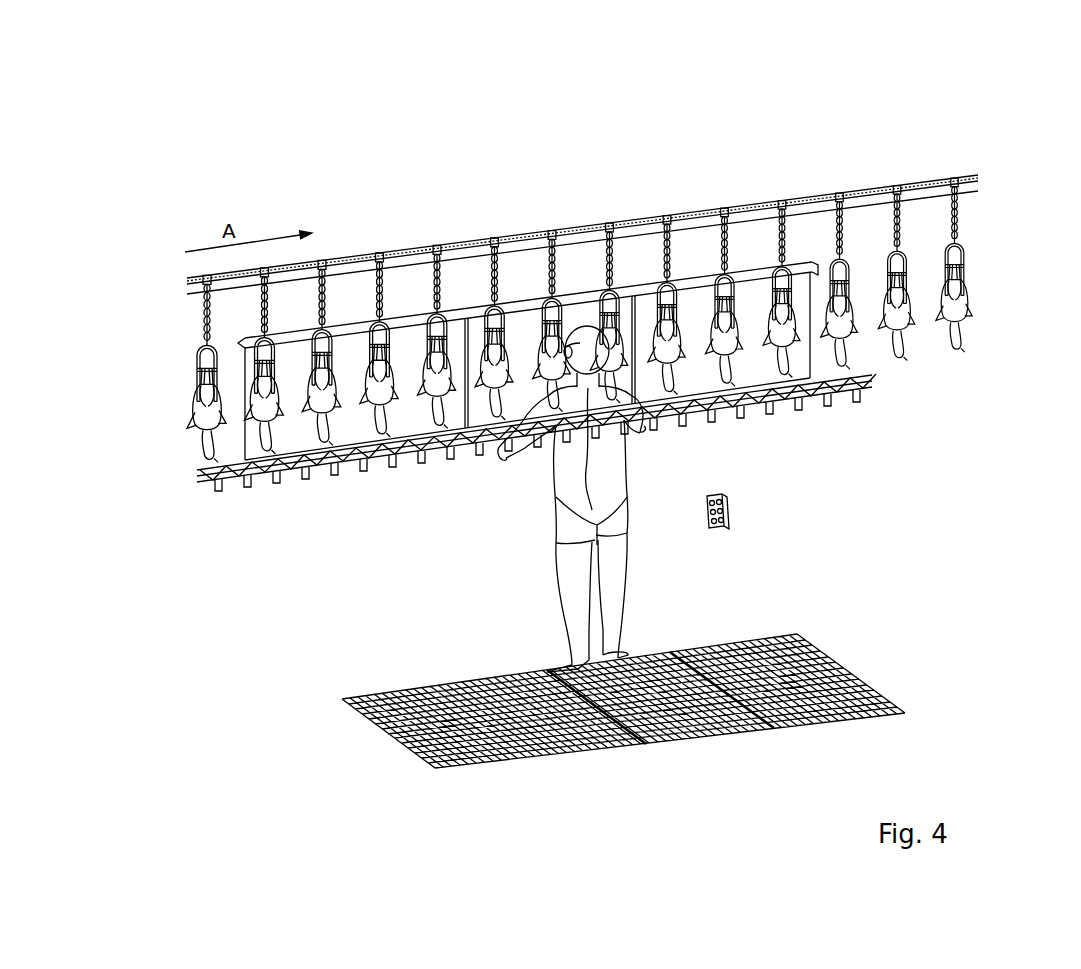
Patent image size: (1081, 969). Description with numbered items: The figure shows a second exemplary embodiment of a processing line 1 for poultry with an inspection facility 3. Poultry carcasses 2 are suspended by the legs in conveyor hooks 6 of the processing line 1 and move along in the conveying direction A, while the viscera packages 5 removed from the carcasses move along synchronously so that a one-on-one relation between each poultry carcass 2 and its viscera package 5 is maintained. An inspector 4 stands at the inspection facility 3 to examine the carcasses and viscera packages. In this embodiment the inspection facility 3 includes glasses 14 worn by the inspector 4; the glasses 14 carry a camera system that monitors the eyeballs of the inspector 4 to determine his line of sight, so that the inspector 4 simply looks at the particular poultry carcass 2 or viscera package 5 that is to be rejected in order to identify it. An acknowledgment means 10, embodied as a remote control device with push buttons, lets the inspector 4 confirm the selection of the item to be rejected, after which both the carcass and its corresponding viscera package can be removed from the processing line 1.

The processing line 1 is at (745, 155).
The poultry carcass 2 is at (970, 332).
The inspection facility 3 is at (372, 632).
The inspector 4 is at (532, 493).
The viscera package 5 is at (202, 468).
The conveyor hook 6 is at (180, 348).
The acknowledgment means 10 is at (745, 528).
The glasses 14 is at (553, 350).